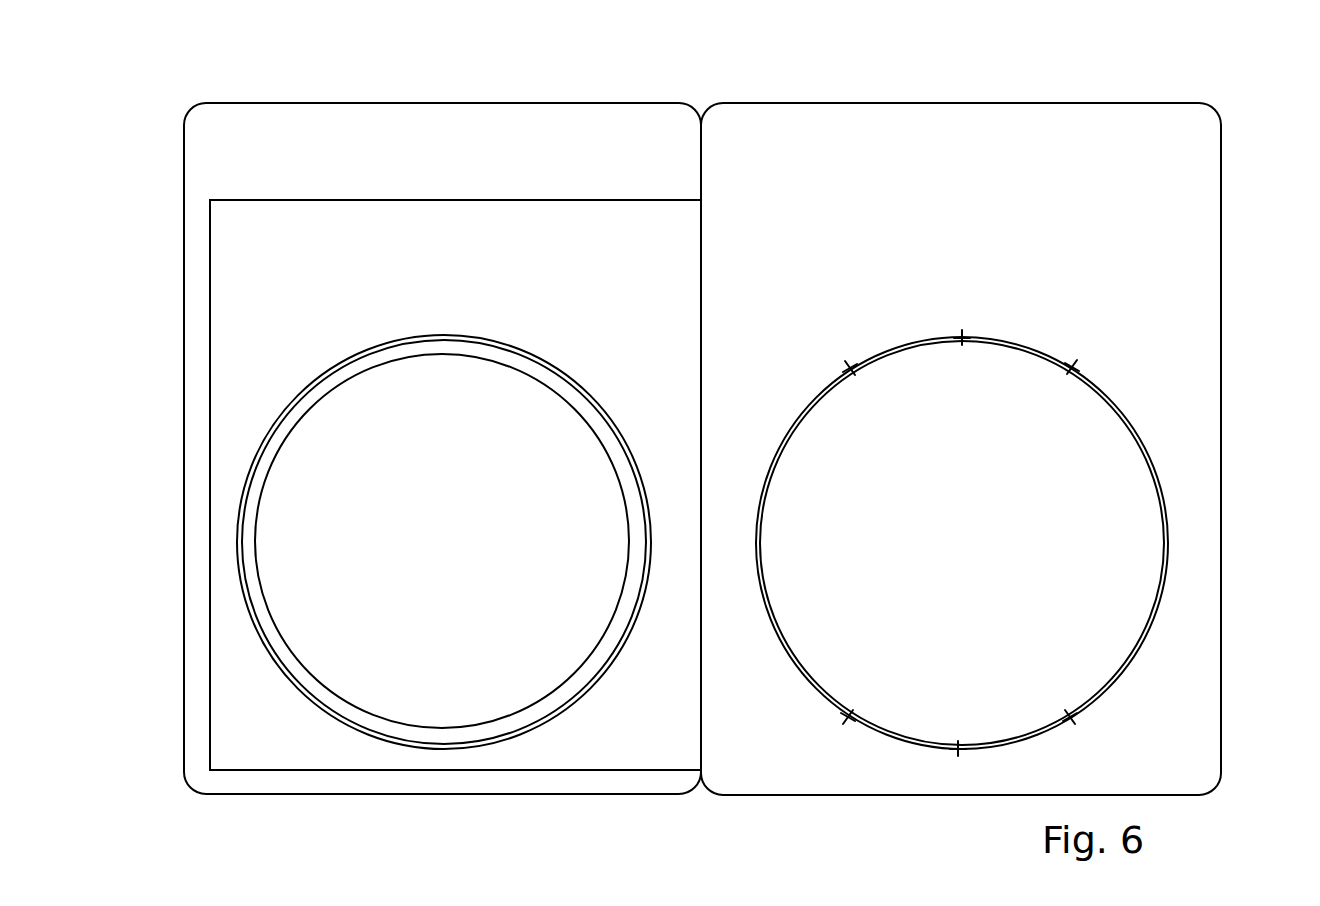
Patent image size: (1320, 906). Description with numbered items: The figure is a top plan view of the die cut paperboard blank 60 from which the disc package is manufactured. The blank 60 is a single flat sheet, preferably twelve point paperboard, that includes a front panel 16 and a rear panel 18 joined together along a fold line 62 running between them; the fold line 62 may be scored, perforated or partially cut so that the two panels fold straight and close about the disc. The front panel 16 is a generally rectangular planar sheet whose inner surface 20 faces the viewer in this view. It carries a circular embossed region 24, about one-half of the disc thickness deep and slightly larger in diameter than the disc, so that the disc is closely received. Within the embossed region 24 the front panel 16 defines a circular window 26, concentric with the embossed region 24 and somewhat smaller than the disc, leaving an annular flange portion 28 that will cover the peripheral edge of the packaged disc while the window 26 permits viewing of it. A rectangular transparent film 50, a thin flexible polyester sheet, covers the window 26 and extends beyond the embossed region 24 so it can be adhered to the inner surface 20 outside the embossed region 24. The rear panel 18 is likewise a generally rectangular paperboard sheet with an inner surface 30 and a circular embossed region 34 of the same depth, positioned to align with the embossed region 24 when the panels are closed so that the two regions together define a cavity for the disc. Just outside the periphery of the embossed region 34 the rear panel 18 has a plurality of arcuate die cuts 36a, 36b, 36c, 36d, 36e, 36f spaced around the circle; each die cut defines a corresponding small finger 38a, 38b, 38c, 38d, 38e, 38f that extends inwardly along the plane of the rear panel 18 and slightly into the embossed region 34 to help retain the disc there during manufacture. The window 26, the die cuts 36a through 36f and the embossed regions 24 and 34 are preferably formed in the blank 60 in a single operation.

The front panel 16 is at (433, 128).
The rear panel 18 is at (1193, 195).
The inner surface 20 is at (610, 176).
The embossed region 24 is at (498, 354).
The window 26 is at (588, 430).
The flange portion 28 is at (408, 737).
The inner surface 30 is at (1131, 180).
The embossed region 34 is at (908, 548).
The die cut 36a is at (850, 368).
The die cut 36b is at (962, 337).
The die cut 36c is at (1072, 367).
The die cut 36d is at (1070, 717).
The die cut 36e is at (958, 748).
The die cut 36f is at (848, 717).
The finger 38a is at (850, 368).
The finger 38b is at (962, 337).
The finger 38c is at (1072, 367).
The finger 38d is at (1072, 720).
The finger 38e is at (958, 750).
The finger 38f is at (845, 720).
The transparent film 50 is at (354, 199).
The blank 60 is at (985, 53).
The fold line 62 is at (704, 170).